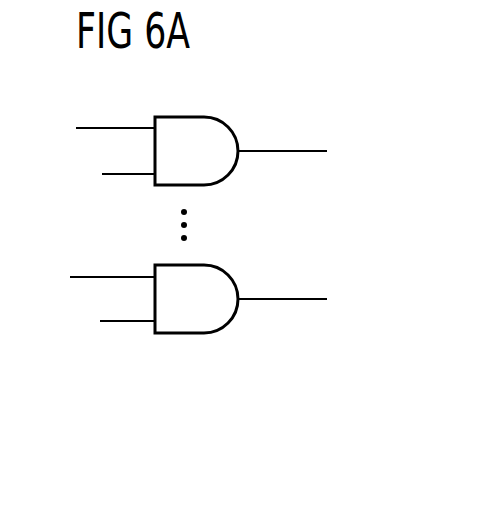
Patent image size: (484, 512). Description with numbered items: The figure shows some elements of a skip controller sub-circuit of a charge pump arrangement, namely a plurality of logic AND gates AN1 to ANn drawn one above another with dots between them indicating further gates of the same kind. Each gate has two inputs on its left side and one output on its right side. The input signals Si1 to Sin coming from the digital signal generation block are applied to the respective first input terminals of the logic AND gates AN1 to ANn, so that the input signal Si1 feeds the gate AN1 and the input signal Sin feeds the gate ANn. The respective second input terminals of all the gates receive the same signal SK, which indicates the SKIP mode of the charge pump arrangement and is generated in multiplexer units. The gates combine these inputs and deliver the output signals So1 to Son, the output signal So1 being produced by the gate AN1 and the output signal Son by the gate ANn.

The logic AND gate AN1 is at (196, 151).
The logic AND gate ANn is at (196, 299).
The input signal Si1 is at (115, 108).
The input signal Sin is at (112, 256).
The signal SK is at (127, 229).
The output signal So1 is at (282, 130).
The output signal Son is at (282, 277).